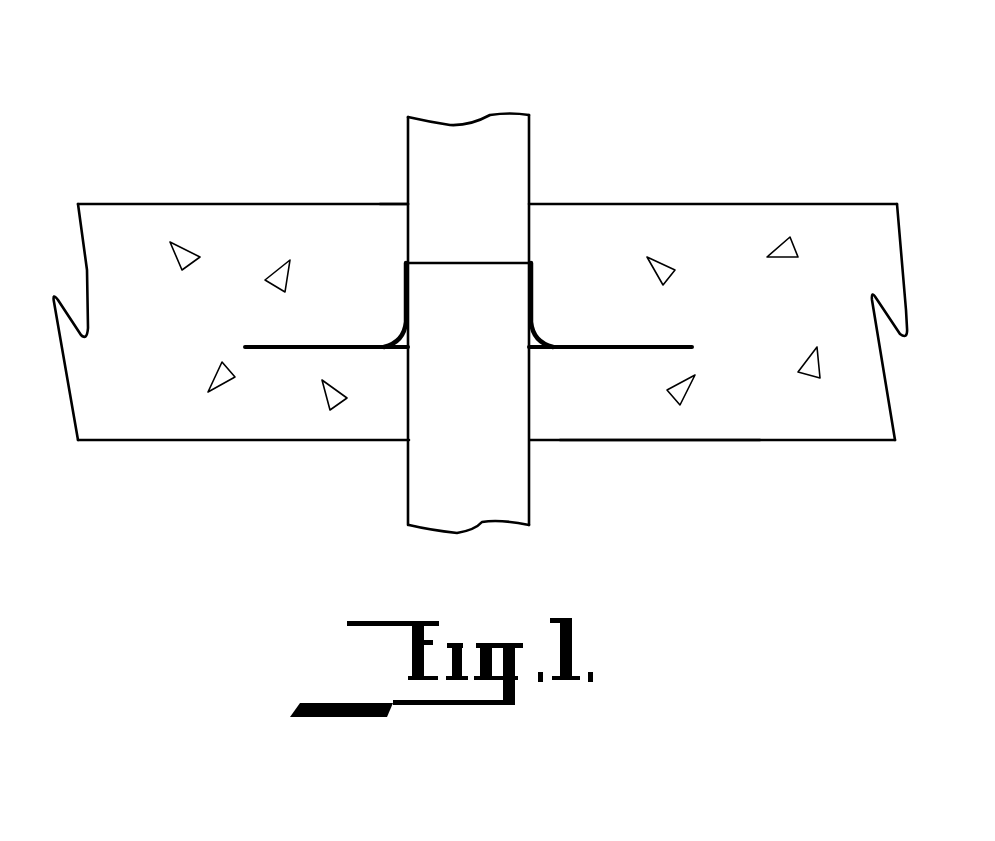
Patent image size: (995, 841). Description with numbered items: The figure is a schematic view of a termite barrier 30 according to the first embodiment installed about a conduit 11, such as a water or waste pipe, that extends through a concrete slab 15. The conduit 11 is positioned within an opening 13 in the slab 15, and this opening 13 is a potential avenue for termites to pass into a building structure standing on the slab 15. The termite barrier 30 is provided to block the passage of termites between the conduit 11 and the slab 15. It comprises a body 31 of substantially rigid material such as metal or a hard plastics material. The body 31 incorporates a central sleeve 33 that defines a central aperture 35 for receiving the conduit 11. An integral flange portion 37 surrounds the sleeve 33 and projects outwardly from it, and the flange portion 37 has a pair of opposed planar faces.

The conduit 11 is at (512, 116).
The opening 13 is at (408, 203).
The concrete slab 15 is at (832, 204).
The termite barrier 30 is at (397, 330).
The body 31 is at (660, 483).
The central sleeve 33 is at (532, 300).
The central aperture 35 is at (530, 262).
The flange portion 37 is at (273, 350).